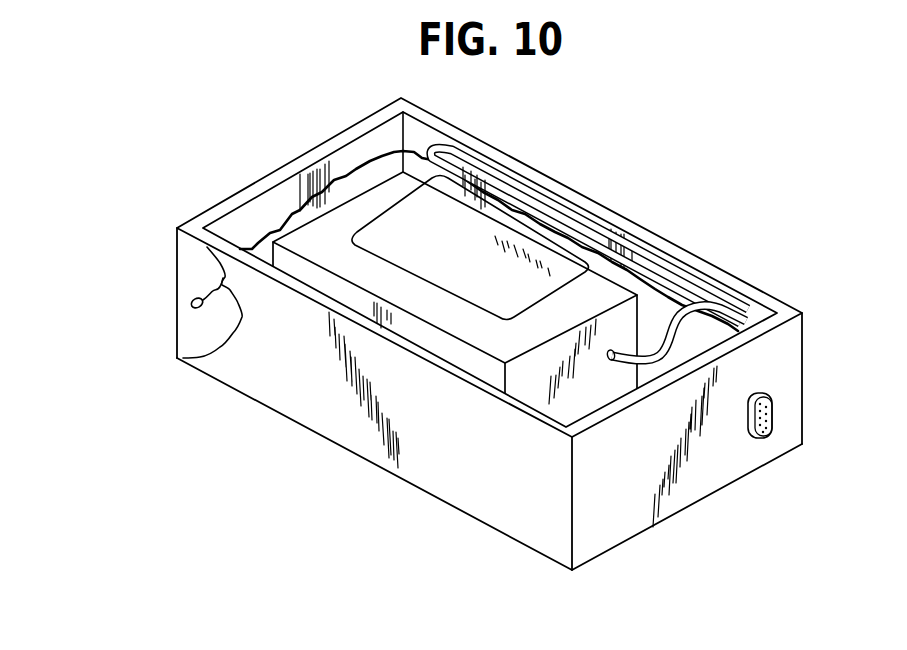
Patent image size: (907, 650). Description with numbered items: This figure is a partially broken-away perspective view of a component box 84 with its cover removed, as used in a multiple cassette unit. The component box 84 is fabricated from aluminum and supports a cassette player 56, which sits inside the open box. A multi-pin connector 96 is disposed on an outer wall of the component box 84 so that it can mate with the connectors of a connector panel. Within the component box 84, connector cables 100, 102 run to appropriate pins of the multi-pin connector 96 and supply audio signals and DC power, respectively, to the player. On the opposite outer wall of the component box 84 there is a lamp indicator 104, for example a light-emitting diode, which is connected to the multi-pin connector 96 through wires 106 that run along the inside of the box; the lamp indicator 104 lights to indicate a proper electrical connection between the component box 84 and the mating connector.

The cassette player 56 is at (493, 232).
The component box 84 is at (804, 313).
The multi-pin connector 96 is at (773, 407).
The connector cable 100 is at (735, 312).
The connector cable 102 is at (640, 245).
The lamp indicator 104 is at (175, 303).
The wires 106 is at (407, 152).